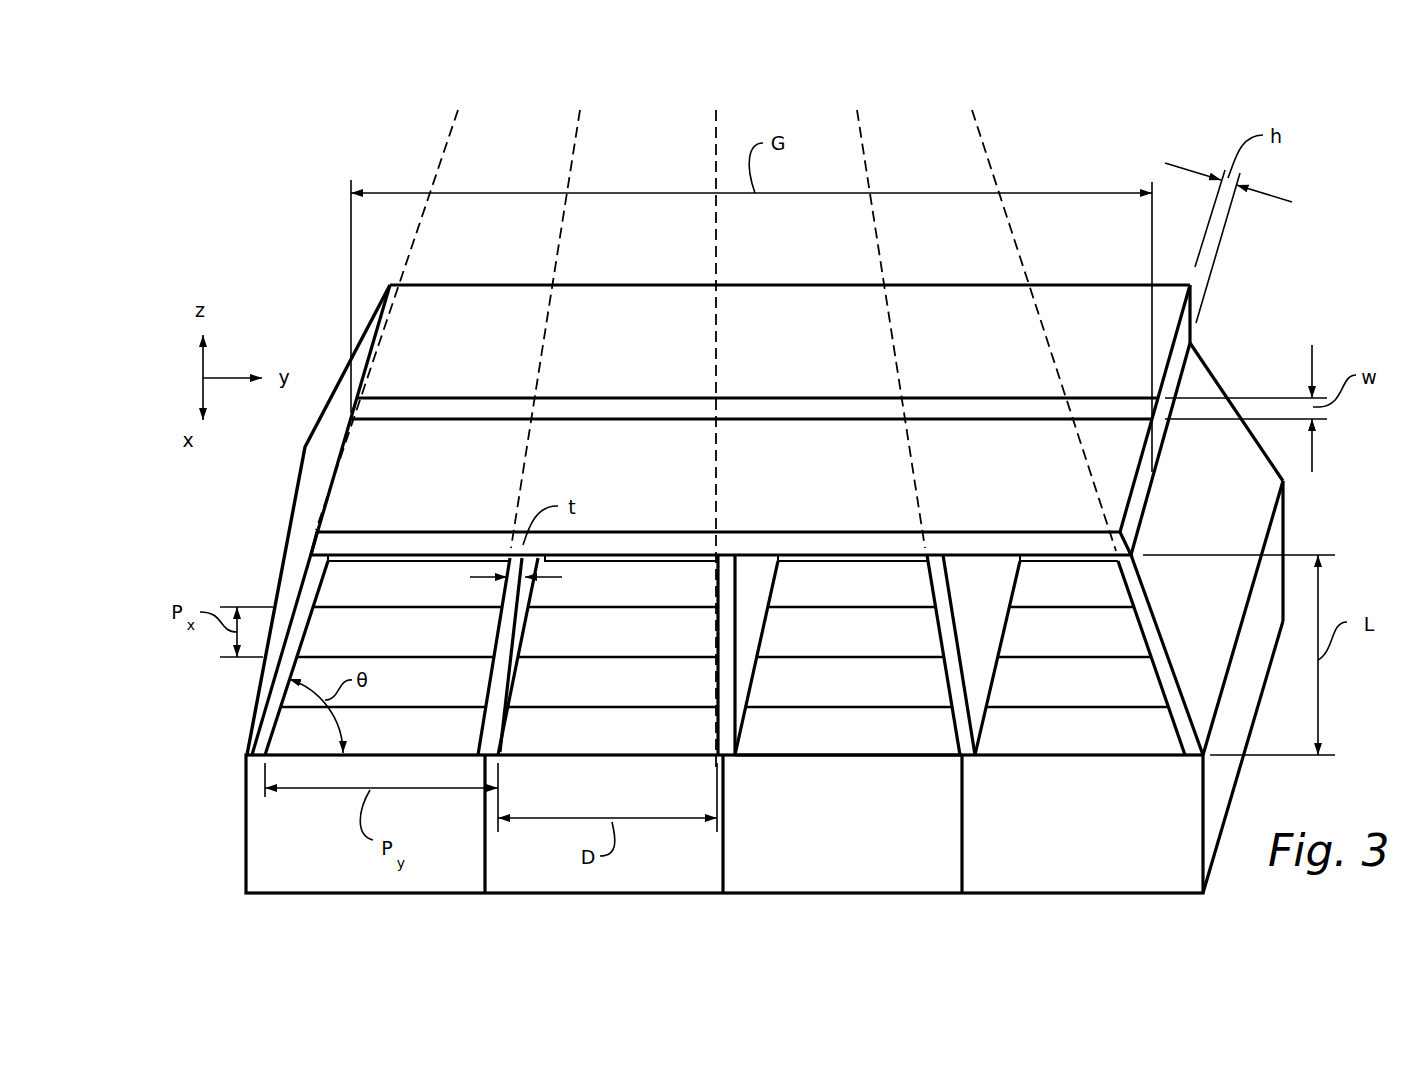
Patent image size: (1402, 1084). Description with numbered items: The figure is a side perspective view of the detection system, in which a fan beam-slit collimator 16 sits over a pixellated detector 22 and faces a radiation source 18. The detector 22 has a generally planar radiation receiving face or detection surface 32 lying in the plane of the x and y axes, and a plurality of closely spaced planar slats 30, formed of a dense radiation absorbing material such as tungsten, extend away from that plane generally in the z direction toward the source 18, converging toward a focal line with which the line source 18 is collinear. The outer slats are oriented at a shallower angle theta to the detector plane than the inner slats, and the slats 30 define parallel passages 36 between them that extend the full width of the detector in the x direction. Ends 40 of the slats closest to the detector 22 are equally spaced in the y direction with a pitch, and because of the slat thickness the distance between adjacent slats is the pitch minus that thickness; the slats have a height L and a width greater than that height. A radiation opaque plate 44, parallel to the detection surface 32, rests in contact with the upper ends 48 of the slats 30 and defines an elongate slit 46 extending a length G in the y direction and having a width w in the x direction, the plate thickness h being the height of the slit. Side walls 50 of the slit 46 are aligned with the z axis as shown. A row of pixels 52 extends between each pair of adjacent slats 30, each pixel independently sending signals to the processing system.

The heat exchanger assembly 16 is at (292, 297).
The radiation source 18 is at (252, 513).
The detector 22 is at (245, 792).
The slats 30 is at (1255, 486).
The detection surface 32 is at (1134, 733).
The passages 36 is at (1083, 567).
The ends of the slats 40 is at (967, 742).
The plate 44 is at (1105, 298).
The slit 46 is at (785, 407).
The upper ends of the slats 48 is at (938, 578).
The side walls of the slit 50 is at (1157, 458).
The pixels 52 is at (860, 745).